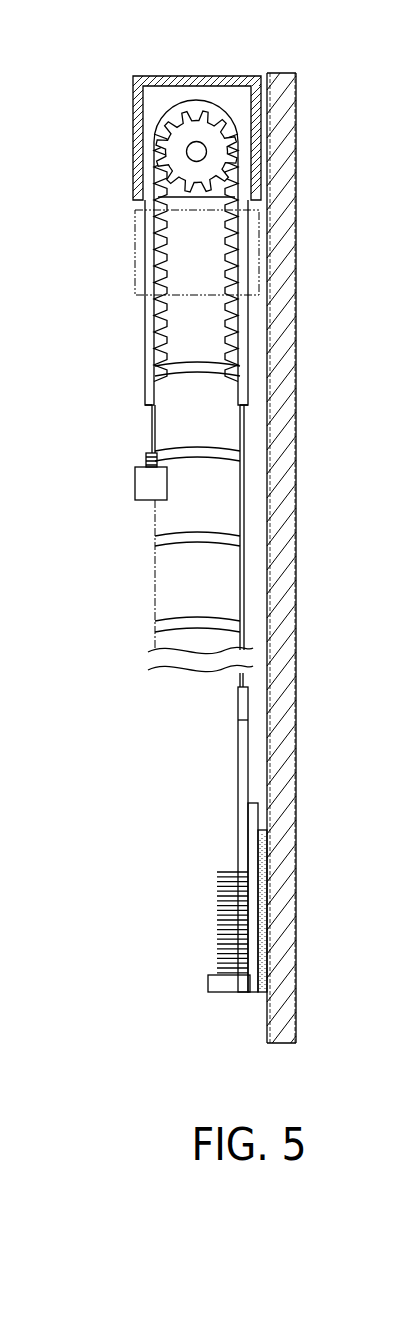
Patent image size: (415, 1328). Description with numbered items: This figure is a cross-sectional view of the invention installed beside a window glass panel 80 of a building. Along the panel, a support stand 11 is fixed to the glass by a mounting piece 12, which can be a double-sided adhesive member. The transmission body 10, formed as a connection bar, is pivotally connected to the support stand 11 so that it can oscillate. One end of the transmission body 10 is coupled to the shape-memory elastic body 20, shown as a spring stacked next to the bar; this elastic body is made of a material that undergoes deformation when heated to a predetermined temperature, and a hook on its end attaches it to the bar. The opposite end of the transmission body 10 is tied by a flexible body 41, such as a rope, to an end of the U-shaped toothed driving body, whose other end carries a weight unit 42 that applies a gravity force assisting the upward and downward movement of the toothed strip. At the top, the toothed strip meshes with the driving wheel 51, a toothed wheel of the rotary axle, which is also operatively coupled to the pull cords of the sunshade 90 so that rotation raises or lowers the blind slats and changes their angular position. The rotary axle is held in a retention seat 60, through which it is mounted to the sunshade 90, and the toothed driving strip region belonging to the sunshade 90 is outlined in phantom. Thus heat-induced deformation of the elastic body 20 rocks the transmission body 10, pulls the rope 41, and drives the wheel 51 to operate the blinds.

The transmission body 10 is at (240, 745).
The support stand 11 is at (253, 820).
The mounting piece 12 is at (267, 922).
The shape-memory elastic body 20 is at (218, 917).
The flexible body 41 is at (243, 468).
The weight unit 42 is at (135, 482).
The driving wheel 51 is at (162, 130).
The retention seat 60 is at (165, 80).
The window glass panel 80 is at (280, 400).
The sunshade 90 is at (133, 249).